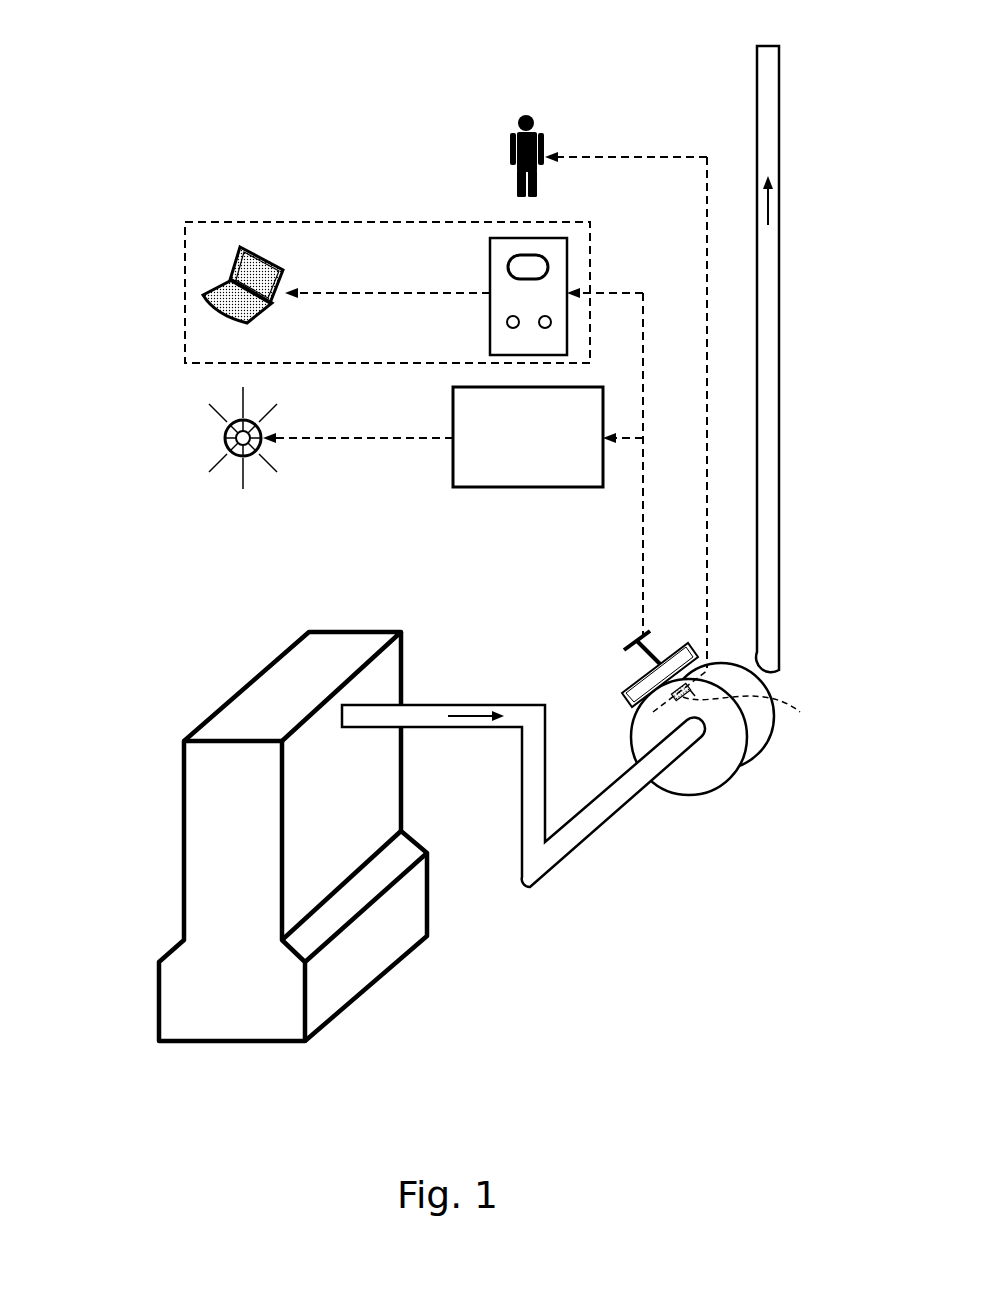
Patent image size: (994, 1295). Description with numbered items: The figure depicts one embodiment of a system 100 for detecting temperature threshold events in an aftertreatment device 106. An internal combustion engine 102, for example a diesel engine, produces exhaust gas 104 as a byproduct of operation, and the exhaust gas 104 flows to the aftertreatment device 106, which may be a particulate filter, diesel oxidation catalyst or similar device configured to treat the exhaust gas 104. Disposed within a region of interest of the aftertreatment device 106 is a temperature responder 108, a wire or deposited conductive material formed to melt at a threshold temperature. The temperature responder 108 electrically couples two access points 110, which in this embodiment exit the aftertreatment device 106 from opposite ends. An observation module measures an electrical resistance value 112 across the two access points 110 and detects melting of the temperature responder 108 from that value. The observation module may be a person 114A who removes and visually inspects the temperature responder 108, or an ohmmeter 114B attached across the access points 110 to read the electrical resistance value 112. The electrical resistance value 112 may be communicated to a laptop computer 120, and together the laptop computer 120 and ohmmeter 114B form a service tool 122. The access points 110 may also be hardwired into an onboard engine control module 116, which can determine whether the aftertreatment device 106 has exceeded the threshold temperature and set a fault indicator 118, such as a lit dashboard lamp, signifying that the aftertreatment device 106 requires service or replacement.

The system 100 is at (112, 64).
The internal combustion engine 102 is at (184, 806).
The exhaust gas 104 is at (477, 728).
The aftertreatment device 106 is at (688, 797).
The temperature responder 108 is at (740, 709).
The access points 110 is at (622, 636).
The electrical resistance value 112 is at (640, 548).
The person 114A is at (510, 153).
The ohmmeter 114B is at (490, 252).
The engine control module (ECM) 116 is at (547, 459).
The fault indicator 118 is at (225, 432).
The laptop computer 120 is at (203, 295).
The service tool 122 is at (203, 222).